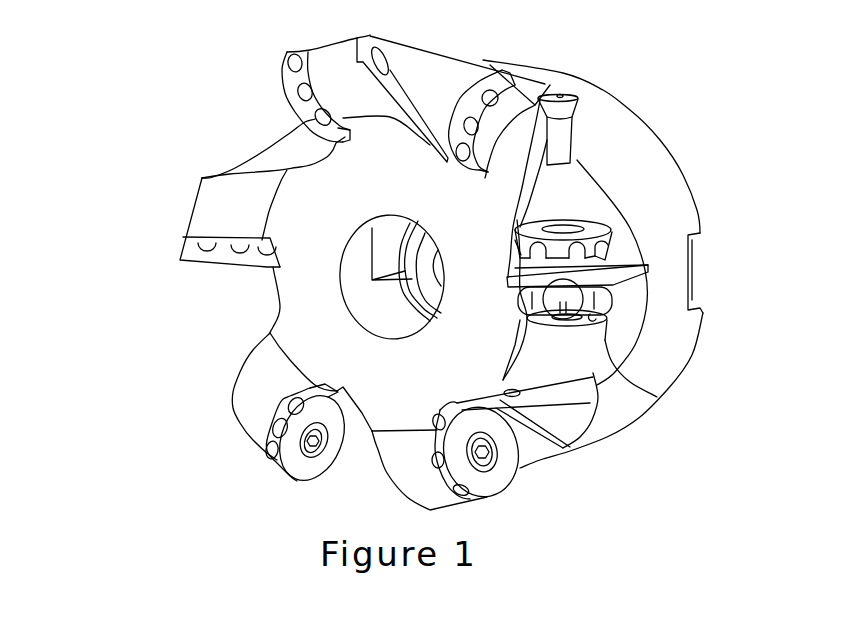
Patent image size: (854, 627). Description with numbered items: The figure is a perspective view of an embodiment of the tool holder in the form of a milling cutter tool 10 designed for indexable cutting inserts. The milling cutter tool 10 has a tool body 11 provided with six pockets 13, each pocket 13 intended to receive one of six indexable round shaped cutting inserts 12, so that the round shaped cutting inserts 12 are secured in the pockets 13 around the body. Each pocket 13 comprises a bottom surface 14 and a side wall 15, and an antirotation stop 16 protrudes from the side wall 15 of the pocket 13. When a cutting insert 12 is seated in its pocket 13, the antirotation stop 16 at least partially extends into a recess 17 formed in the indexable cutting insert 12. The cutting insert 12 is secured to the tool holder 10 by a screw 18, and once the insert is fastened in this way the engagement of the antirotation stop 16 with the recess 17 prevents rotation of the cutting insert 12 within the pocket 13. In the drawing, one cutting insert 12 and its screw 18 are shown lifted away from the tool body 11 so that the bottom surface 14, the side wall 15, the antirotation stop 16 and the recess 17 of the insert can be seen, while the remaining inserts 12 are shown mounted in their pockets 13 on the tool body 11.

The milling cutter tool 10 is at (128, 212).
The tool body 11 is at (298, 312).
The indexable round shaped cutting insert 12 is at (597, 227).
The pocket 13 is at (614, 322).
The bottom surface 14 is at (657, 393).
The side wall 15 is at (518, 290).
The antirotation stop 16 is at (577, 302).
The recess 17 is at (603, 253).
The screw 18 is at (582, 133).